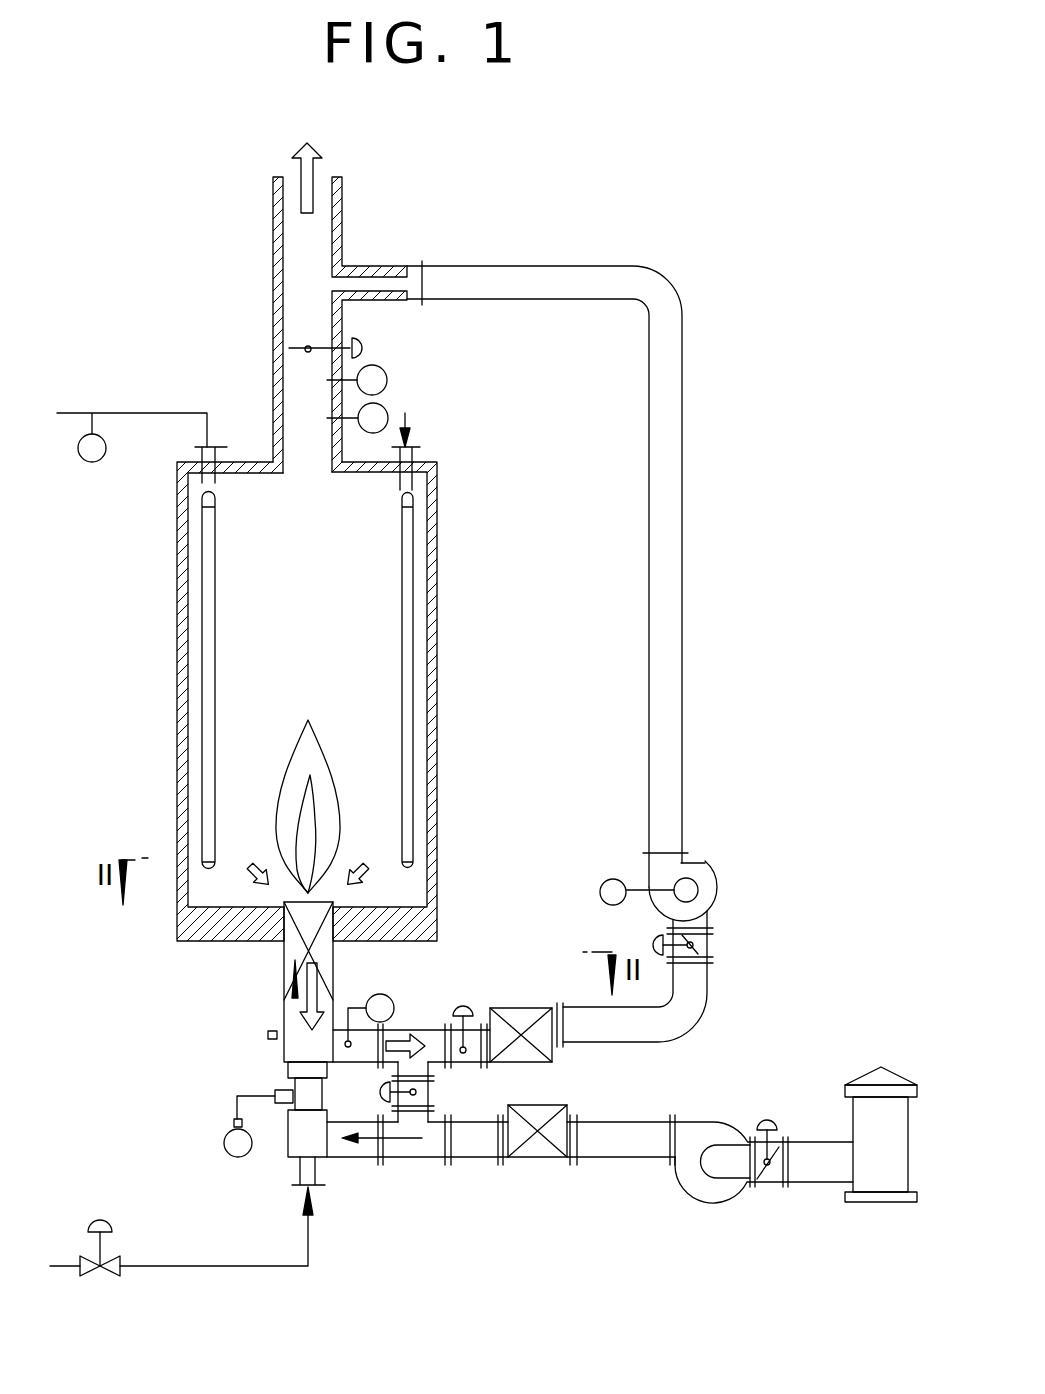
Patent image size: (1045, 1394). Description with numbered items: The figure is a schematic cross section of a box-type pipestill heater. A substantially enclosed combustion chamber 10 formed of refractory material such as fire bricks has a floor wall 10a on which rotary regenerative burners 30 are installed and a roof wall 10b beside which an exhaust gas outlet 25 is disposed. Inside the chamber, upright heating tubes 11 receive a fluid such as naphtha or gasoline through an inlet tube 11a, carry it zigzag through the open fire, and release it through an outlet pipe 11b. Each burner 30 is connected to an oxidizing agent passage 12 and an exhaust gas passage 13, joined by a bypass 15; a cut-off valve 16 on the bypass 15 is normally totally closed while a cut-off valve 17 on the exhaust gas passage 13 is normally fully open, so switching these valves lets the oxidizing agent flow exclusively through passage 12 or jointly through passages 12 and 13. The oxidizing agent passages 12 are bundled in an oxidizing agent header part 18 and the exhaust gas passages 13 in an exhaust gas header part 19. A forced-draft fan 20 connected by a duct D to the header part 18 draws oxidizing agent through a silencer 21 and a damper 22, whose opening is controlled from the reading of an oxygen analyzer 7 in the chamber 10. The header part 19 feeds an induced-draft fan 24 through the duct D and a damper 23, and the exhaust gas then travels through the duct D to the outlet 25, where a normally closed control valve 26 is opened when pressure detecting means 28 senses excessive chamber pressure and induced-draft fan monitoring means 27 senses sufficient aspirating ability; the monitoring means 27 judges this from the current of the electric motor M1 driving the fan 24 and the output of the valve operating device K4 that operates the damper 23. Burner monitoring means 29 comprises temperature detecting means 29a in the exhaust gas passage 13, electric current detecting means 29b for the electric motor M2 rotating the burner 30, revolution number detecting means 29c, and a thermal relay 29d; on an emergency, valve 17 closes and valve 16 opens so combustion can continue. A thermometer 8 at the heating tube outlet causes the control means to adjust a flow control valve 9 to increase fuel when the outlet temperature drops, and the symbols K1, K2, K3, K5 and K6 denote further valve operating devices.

The oxygen analyzer 7 is at (388, 405).
The thermometer 8 is at (93, 462).
The flow control valve 9 is at (101, 1276).
The combustion chamber 10 is at (177, 636).
The floor wall 10a is at (230, 941).
The roof wall 10b is at (370, 473).
The heating tubes 11 is at (216, 637).
The inlet tube 11a is at (421, 441).
The outlet pipe 11b is at (196, 445).
The oxidizing agent passage 12 is at (413, 1158).
The exhaust gas passage 13 is at (425, 1030).
The bypass 15 is at (429, 1103).
The cut-off valve 16 is at (430, 1090).
The cut-off valve 17 is at (470, 1040).
The oxidizing agent header part 18 is at (538, 1158).
The exhaust gas header part 19 is at (553, 1048).
The forced-draft fan 20 is at (716, 1205).
The silencer 21 is at (853, 1125).
The damper 22 is at (763, 1188).
The damper 23 is at (713, 945).
The induced-draft fan 24 is at (723, 863).
The exhaust gas outlet 25 is at (273, 272).
The control valve 26 is at (290, 346).
The induced-draft fan monitoring means 27 is at (613, 879).
The pressure detecting means 28 is at (388, 380).
The burner monitoring means 29 is at (180, 1200).
The temperature detecting means 29a is at (366, 1006).
The electric current detecting means 29b is at (232, 1103).
The revolution number detecting means 29c is at (268, 1037).
The thermal relay 29d is at (258, 1148).
The rotary regenerative burner 30 is at (338, 981).
The duct D is at (683, 612).
The valve operating device K1 is at (363, 347).
The valve operating device K2 is at (379, 1092).
The valve operating device K3 is at (461, 1007).
The valve operating device K4 is at (653, 941).
The valve operating device K5 is at (767, 1119).
The valve operating device K6 is at (100, 1219).
The electric motor M1 is at (720, 889).
The electric motor M2 is at (283, 1091).